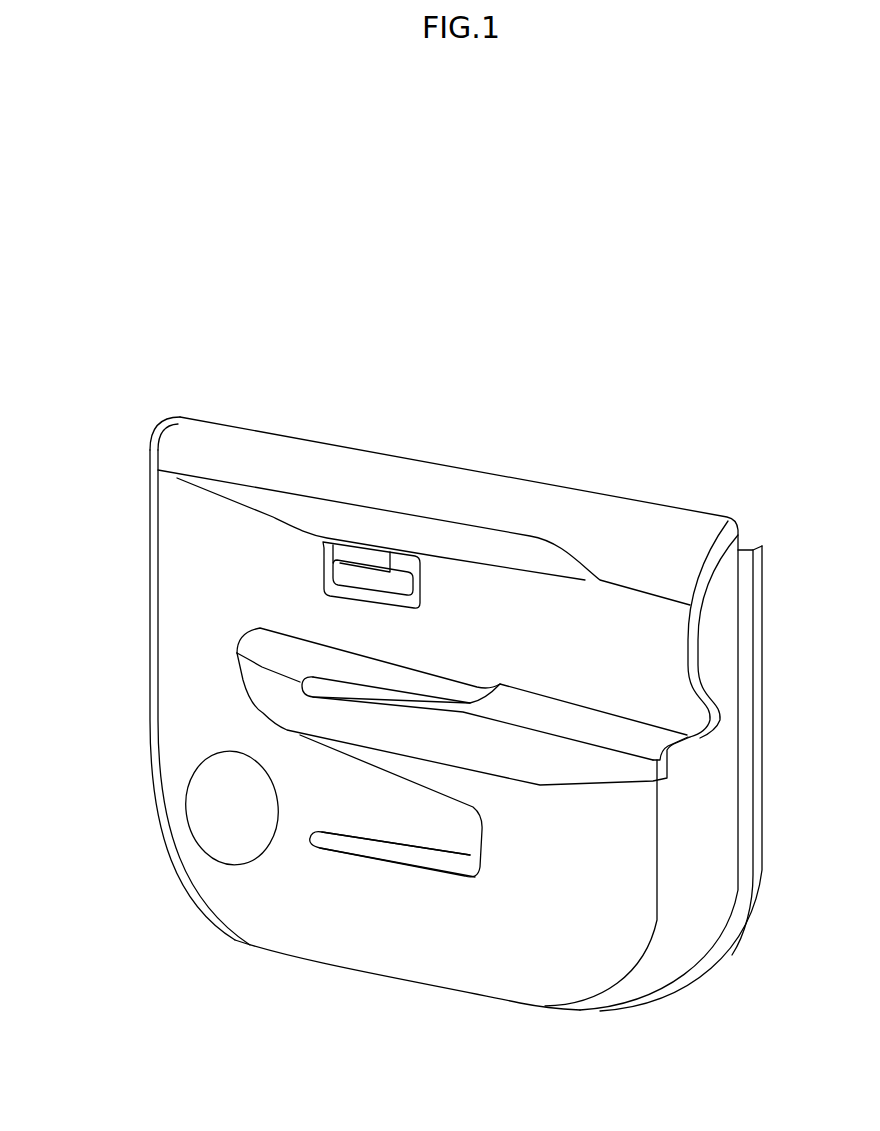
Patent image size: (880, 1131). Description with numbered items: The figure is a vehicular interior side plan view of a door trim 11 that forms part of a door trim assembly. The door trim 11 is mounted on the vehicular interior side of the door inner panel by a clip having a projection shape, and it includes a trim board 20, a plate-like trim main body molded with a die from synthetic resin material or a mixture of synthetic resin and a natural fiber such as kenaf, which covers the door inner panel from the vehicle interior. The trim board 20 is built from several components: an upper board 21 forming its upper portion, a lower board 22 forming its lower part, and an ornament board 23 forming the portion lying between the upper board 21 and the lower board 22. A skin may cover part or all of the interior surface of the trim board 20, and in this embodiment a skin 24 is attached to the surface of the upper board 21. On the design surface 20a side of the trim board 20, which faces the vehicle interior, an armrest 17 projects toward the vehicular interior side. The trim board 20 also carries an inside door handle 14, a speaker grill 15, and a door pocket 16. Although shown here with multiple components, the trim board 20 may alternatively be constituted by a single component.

The door trim 11 is at (681, 447).
The inside door handle 14 is at (370, 583).
The speaker grill 15 is at (187, 822).
The door pocket 16 is at (373, 862).
The armrest 17 is at (357, 740).
The trim board 20 is at (355, 657).
The design surface 20a is at (463, 950).
The upper board 21 is at (168, 450).
The lower board 22 is at (70, 462).
The ornament board 23 is at (275, 508).
The skin 24 is at (306, 453).